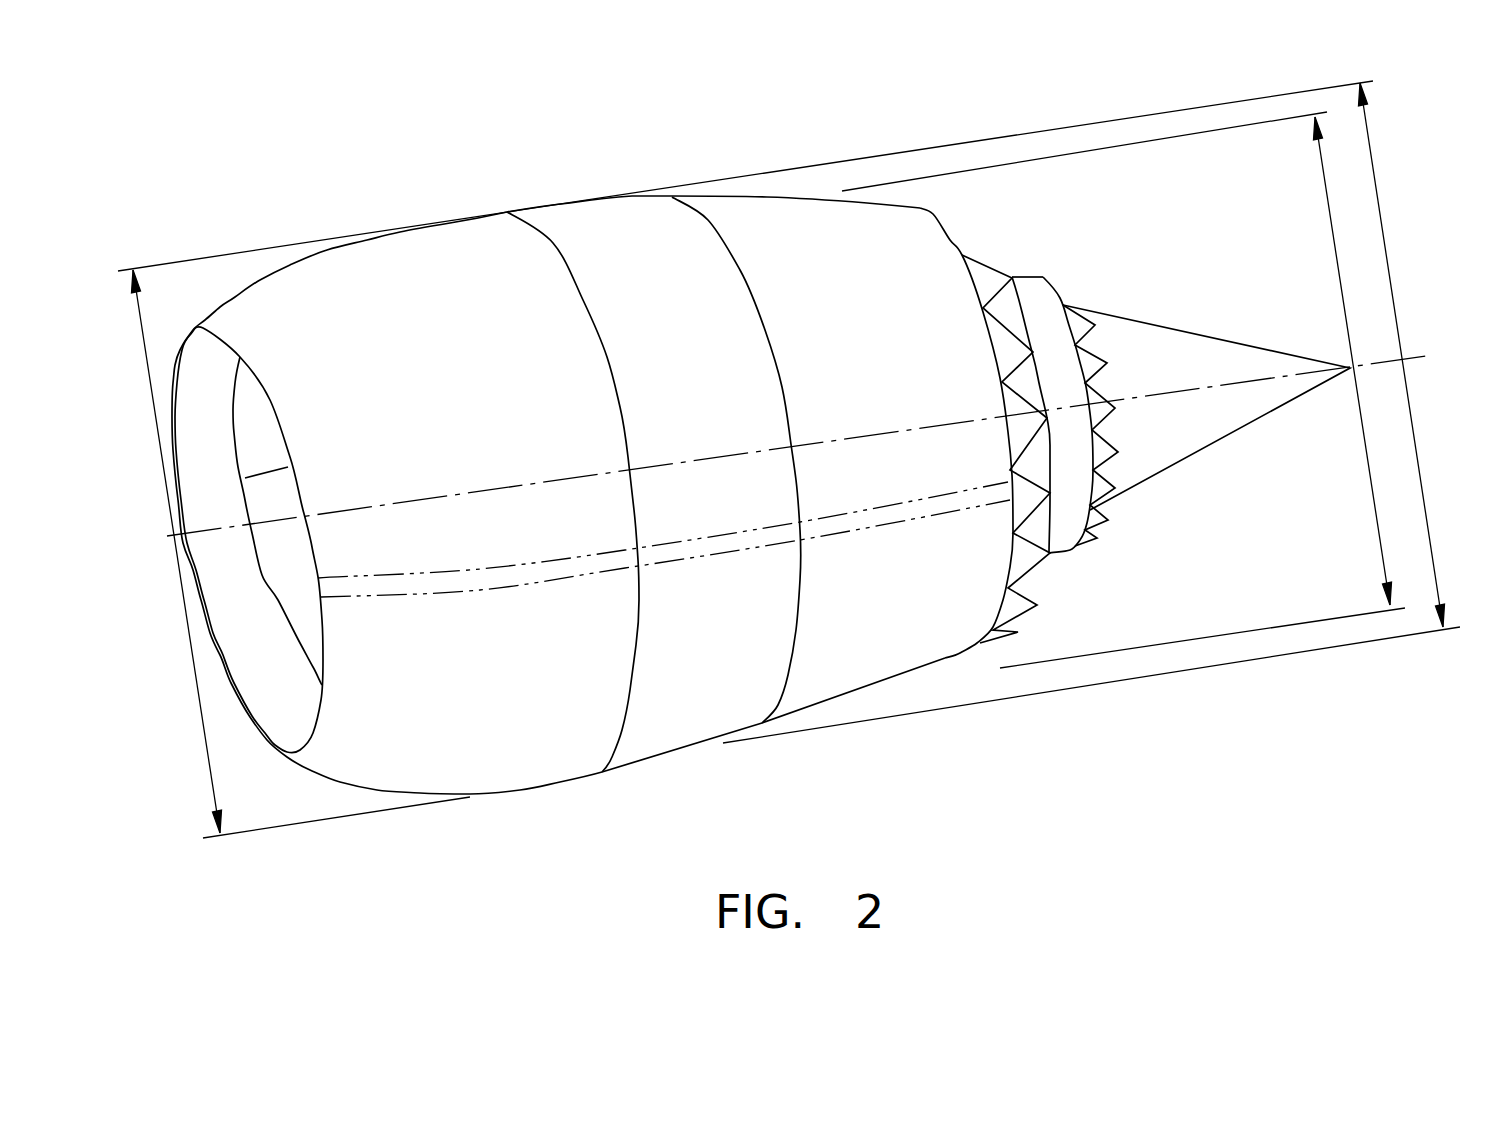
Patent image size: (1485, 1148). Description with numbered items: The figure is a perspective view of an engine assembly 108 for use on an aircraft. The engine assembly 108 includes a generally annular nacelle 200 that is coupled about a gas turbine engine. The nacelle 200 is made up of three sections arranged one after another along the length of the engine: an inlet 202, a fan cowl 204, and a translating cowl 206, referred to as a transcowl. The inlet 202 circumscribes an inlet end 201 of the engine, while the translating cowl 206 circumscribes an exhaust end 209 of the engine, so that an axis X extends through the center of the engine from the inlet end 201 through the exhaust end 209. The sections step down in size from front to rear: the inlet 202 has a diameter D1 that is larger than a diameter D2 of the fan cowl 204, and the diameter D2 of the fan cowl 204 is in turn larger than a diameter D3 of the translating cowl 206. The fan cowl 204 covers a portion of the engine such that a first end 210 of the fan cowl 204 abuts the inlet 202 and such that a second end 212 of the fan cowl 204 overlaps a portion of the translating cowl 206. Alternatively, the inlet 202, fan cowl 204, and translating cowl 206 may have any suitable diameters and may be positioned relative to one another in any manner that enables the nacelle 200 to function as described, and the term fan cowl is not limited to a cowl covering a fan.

The engine assembly 108 is at (297, 185).
The nacelle 200 is at (560, 140).
The inlet end 201 is at (295, 705).
The inlet 202 is at (438, 246).
The fan cowl 204 is at (587, 225).
The translating cowl 206 is at (758, 212).
The exhaust end 209 is at (1077, 265).
The first end 210 is at (602, 772).
The second end 212 is at (762, 723).
The axis X is at (242, 530).
The diameter of inlet D1 is at (192, 664).
The diameter of fan cowl D2 is at (1390, 262).
The diameter of transcowl D3 is at (1335, 264).